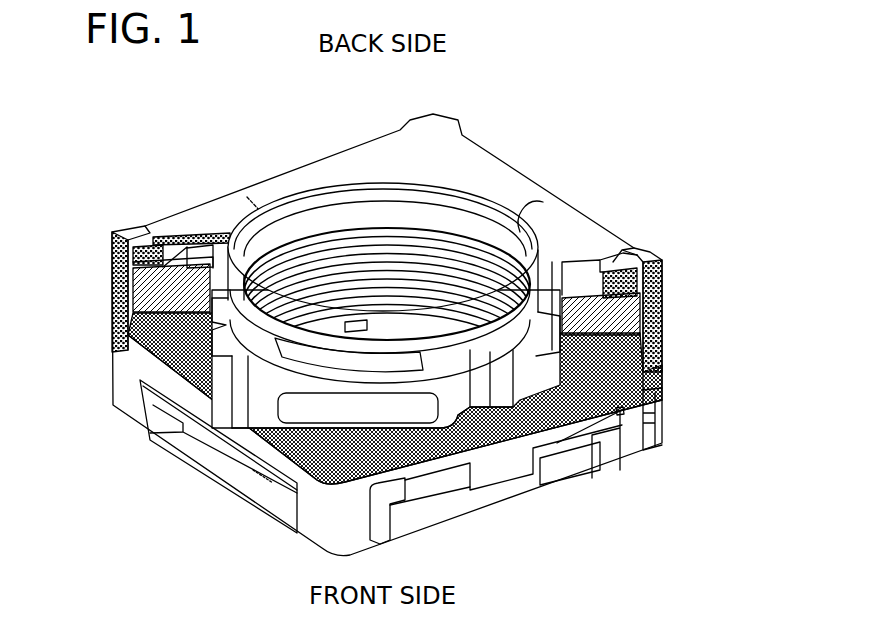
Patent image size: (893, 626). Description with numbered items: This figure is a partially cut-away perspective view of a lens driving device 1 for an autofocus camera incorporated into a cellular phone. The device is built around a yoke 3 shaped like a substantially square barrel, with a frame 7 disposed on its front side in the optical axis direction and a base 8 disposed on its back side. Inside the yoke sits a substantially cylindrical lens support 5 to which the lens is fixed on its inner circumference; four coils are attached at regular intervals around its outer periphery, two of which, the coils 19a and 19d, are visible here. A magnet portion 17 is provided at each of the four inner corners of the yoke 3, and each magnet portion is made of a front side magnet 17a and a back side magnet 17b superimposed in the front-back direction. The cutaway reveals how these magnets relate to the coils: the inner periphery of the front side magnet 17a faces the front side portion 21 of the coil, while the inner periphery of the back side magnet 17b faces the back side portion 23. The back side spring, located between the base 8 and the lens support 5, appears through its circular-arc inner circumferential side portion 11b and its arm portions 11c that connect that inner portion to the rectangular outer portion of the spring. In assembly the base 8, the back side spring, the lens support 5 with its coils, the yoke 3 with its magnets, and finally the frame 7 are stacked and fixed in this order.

The lens driving device 1 is at (441, 91).
The yoke 3 is at (113, 325).
The lens support 5 is at (440, 219).
The frame 7 is at (228, 475).
The base 8 is at (555, 217).
The inner circumferential side portion 11b is at (268, 232).
The arm portion 11c is at (188, 235).
The magnet portion 17 is at (692, 351).
The front side magnet 17a is at (662, 317).
The back side magnet 17b is at (662, 276).
The coil 19a is at (450, 423).
The coil 19d is at (506, 403).
The front side portion 21 is at (620, 405).
The back side portion 23 is at (575, 297).